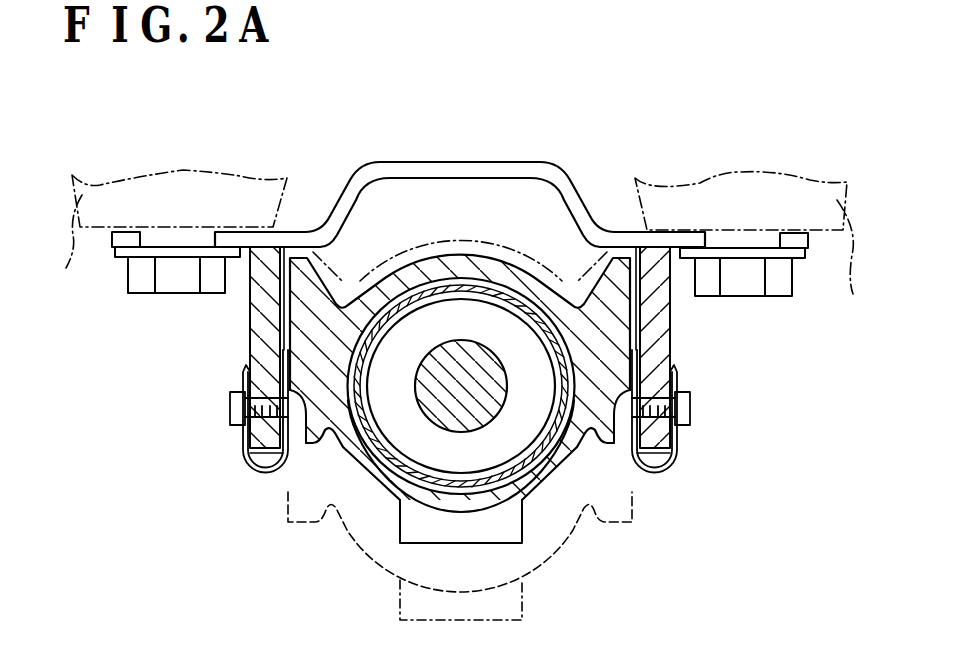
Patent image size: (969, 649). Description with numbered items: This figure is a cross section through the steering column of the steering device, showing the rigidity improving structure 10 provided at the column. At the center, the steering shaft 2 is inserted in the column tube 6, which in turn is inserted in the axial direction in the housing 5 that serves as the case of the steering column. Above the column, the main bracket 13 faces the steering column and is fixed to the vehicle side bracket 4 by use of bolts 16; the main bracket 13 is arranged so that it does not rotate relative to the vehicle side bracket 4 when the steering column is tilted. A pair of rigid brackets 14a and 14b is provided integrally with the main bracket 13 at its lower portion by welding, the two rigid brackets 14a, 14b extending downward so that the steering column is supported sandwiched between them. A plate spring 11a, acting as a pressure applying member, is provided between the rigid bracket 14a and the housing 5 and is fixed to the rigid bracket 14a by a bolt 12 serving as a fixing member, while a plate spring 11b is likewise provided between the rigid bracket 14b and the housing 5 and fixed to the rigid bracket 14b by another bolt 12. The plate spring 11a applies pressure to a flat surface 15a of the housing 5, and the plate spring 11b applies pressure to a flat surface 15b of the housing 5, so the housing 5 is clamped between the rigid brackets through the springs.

The steering shaft 2 is at (472, 417).
The vehicle side bracket 4 is at (459, 246).
The housing 5 is at (543, 467).
The column tube 6 is at (547, 478).
The rigidity improving structure 10 is at (740, 525).
The plate spring 11a is at (258, 474).
The plate spring 11b is at (661, 472).
The bolt 12 is at (231, 410).
The main bracket 13 is at (424, 162).
The rigid bracket 14a is at (262, 330).
The rigid bracket 14b is at (667, 320).
The flat surface 15a is at (294, 397).
The flat surface 15b is at (622, 397).
The bolt 16 is at (167, 293).